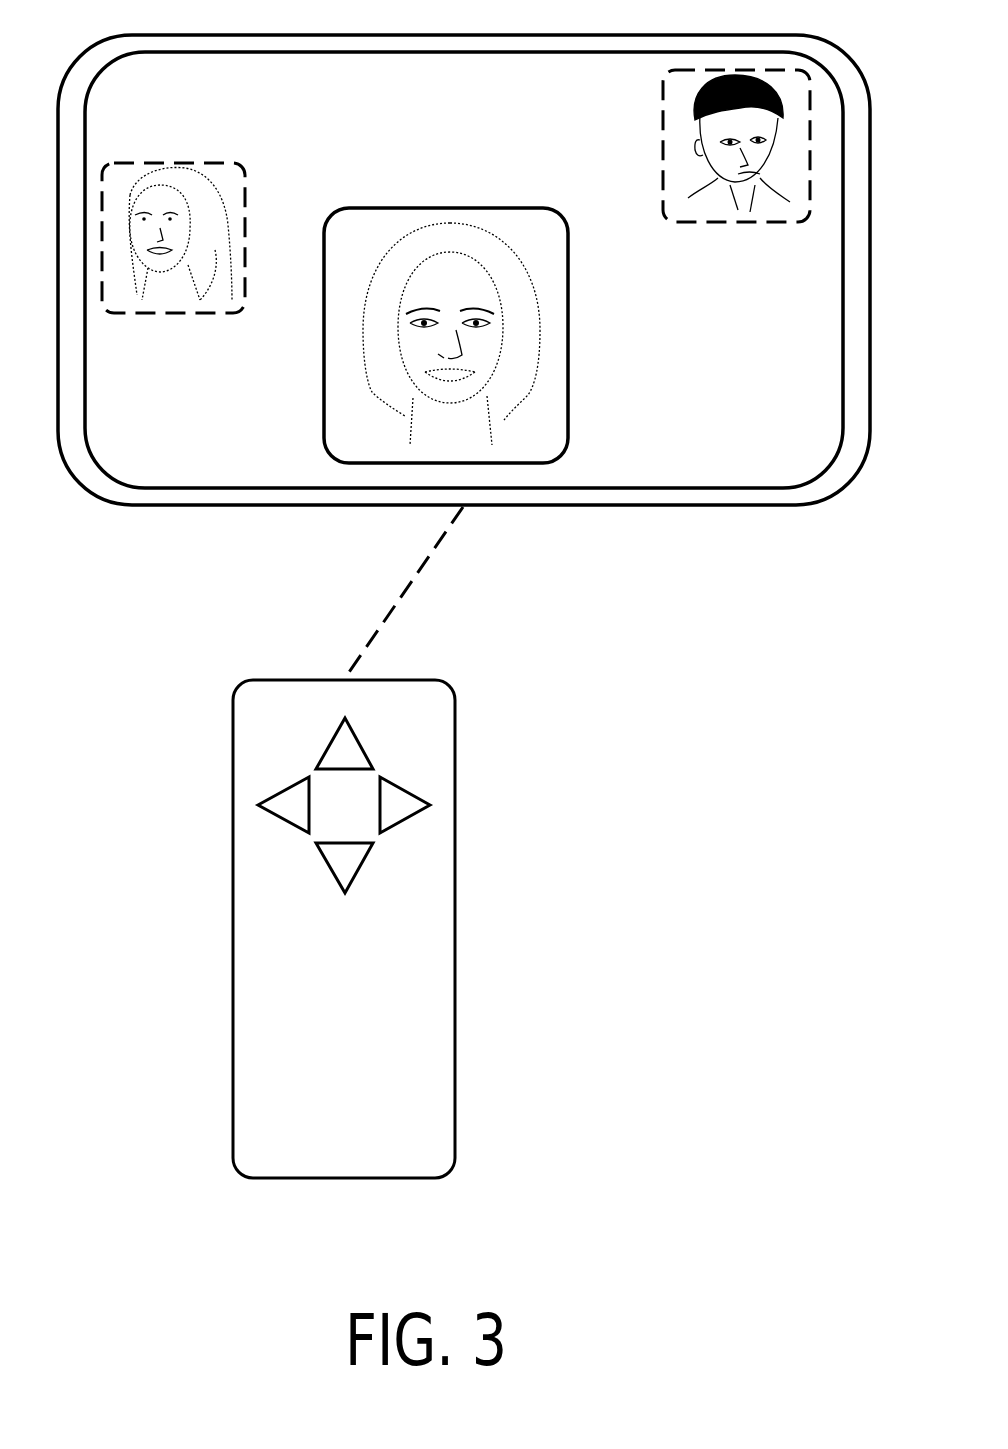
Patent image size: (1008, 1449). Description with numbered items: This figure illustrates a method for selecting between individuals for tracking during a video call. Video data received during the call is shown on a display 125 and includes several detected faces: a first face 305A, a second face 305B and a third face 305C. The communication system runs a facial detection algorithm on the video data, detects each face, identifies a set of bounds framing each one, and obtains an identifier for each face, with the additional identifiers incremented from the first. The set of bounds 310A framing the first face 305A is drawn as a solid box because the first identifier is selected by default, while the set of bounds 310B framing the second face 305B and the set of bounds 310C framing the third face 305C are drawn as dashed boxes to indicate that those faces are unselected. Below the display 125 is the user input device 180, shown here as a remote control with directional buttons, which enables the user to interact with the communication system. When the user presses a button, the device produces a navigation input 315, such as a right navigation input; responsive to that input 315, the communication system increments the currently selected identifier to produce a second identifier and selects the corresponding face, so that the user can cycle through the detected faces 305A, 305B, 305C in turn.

The display 125 is at (705, 36).
The set of bounds 310A is at (370, 208).
The first face 305A is at (493, 365).
The set of bounds 310B is at (203, 162).
The second face 305B is at (150, 275).
The set of bounds 310C is at (662, 108).
The third face 305C is at (723, 170).
The user input device 180 is at (455, 988).
The navigation input 315 is at (408, 805).